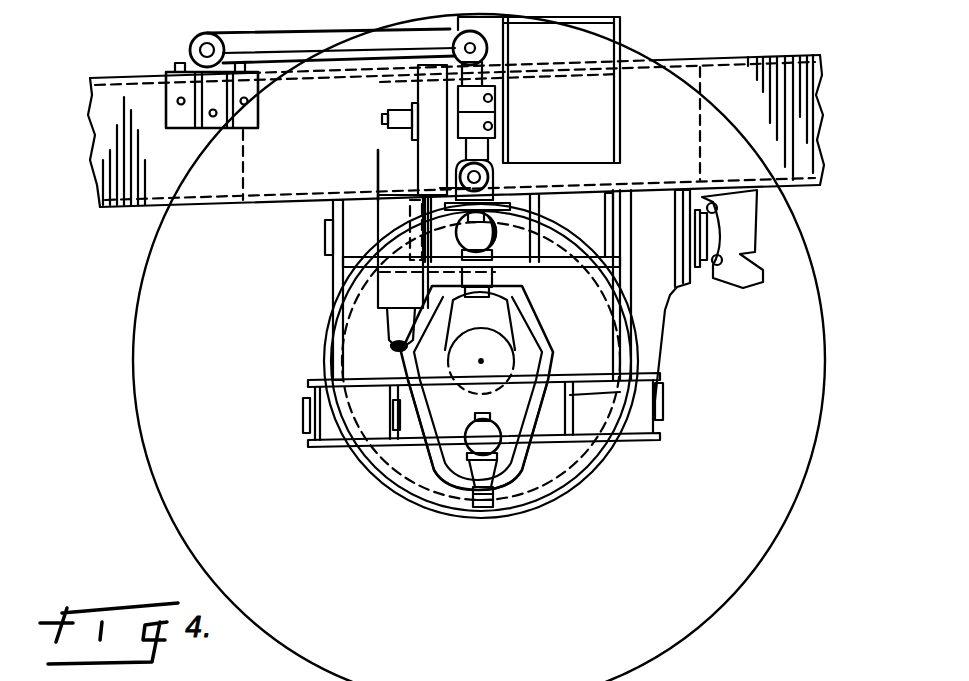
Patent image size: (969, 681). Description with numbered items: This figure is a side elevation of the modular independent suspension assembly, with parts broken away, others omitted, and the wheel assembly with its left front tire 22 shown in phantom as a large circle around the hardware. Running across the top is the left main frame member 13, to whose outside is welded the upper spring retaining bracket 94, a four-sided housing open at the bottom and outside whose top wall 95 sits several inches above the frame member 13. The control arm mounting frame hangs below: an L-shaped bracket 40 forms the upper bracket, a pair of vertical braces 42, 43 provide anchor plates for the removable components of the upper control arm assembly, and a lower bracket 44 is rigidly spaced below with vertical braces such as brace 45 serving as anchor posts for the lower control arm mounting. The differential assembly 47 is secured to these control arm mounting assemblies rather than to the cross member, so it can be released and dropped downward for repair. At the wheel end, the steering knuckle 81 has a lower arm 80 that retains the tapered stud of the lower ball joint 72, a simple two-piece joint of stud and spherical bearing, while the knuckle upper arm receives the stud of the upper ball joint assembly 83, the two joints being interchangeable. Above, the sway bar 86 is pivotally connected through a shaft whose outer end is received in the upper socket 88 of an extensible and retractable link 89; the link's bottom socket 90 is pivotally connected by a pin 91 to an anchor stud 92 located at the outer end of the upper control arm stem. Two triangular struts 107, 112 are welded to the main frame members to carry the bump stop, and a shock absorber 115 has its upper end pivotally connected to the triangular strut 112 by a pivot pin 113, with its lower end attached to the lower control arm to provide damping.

The left main frame member 13 is at (815, 90).
The left front tire 22 is at (818, 442).
The L-shaped bracket 40 is at (553, 270).
The vertical brace 42 is at (336, 350).
The vertical brace 43 is at (620, 327).
The lower bracket 44 is at (632, 440).
The vertical brace 45 is at (593, 440).
The differential assembly 47 is at (664, 313).
The lower ball joint 72 is at (520, 462).
The lower arm 80 is at (457, 477).
The steering knuckle 81 is at (433, 466).
The upper ball joint assembly 83 is at (450, 228).
The sway bar 86 is at (298, 42).
The upper socket 88 is at (468, 30).
The extensible and retractable link 89 is at (377, 153).
The bottom socket 90 is at (493, 158).
The pin 91 is at (505, 170).
The anchor stud 92 is at (455, 188).
The upper spring retaining bracket 94 is at (636, 35).
The top wall 95 is at (597, 17).
The triangular strut 107 is at (497, 110).
The triangular strut 112 is at (412, 96).
The pivot pin 113 is at (387, 117).
The shock absorber 115 is at (398, 287).